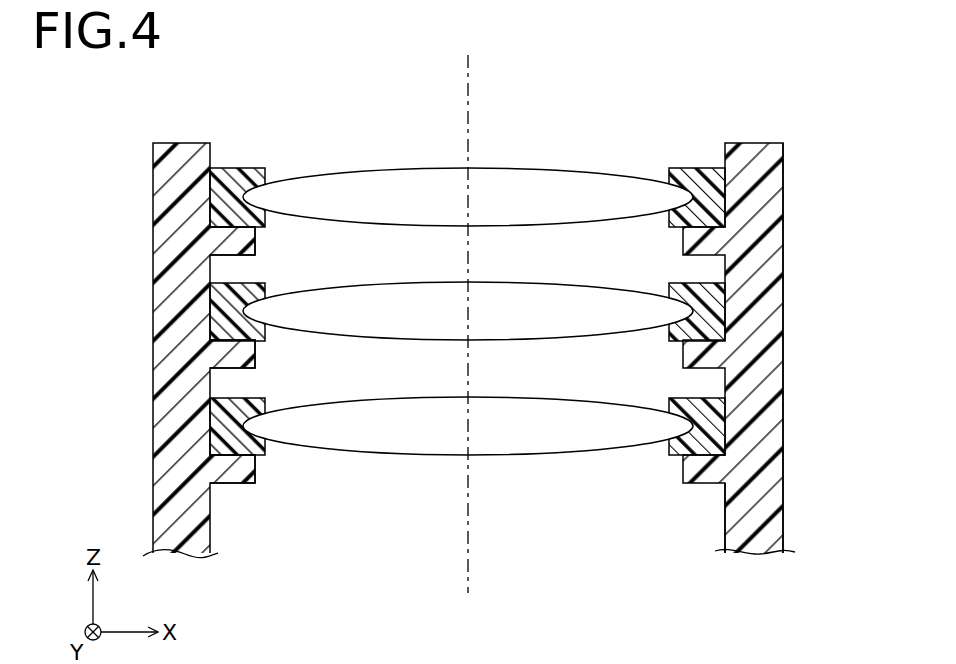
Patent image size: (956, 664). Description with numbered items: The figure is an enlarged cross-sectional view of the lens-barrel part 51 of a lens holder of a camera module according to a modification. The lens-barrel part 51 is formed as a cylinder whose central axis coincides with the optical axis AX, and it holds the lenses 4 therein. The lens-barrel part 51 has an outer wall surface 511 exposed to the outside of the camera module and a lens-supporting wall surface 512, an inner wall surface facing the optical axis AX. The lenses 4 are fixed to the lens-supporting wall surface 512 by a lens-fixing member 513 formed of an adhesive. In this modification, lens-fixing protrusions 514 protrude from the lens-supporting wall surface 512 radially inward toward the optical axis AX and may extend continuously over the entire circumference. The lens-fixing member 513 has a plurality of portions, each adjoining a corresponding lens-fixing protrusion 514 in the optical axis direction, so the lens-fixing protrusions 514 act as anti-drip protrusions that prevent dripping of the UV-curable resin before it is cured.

The lenses 4 is at (555, 182).
The lens-barrel part 51 is at (770, 354).
The outer wall surface 511 is at (783, 508).
The lens-supporting wall surface 512 is at (725, 508).
The lens-fixing member 513 is at (247, 182).
The lens-fixing protrusions 514 is at (252, 484).
The optical axis AX is at (468, 574).